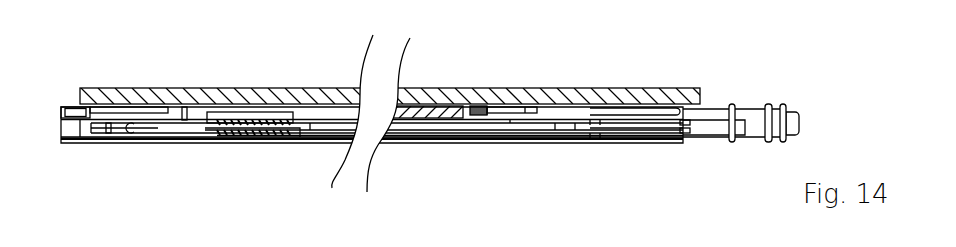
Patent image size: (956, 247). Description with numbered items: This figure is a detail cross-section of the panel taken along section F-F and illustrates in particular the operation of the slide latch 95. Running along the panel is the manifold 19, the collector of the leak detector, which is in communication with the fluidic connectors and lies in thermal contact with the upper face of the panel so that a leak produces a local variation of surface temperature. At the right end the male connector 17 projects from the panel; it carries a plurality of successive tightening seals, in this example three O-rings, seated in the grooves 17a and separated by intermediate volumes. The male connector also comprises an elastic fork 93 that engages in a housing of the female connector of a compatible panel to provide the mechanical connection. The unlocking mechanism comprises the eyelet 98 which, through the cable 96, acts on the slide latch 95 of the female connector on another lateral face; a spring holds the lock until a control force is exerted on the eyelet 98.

The manifold 19 is at (131, 101).
The cable 96 is at (313, 130).
The slide latch 95 is at (110, 133).
The eyelet 98 is at (688, 138).
The elastic fork 93 is at (735, 134).
The male connector 17 is at (797, 108).
The groove 17a is at (737, 103).